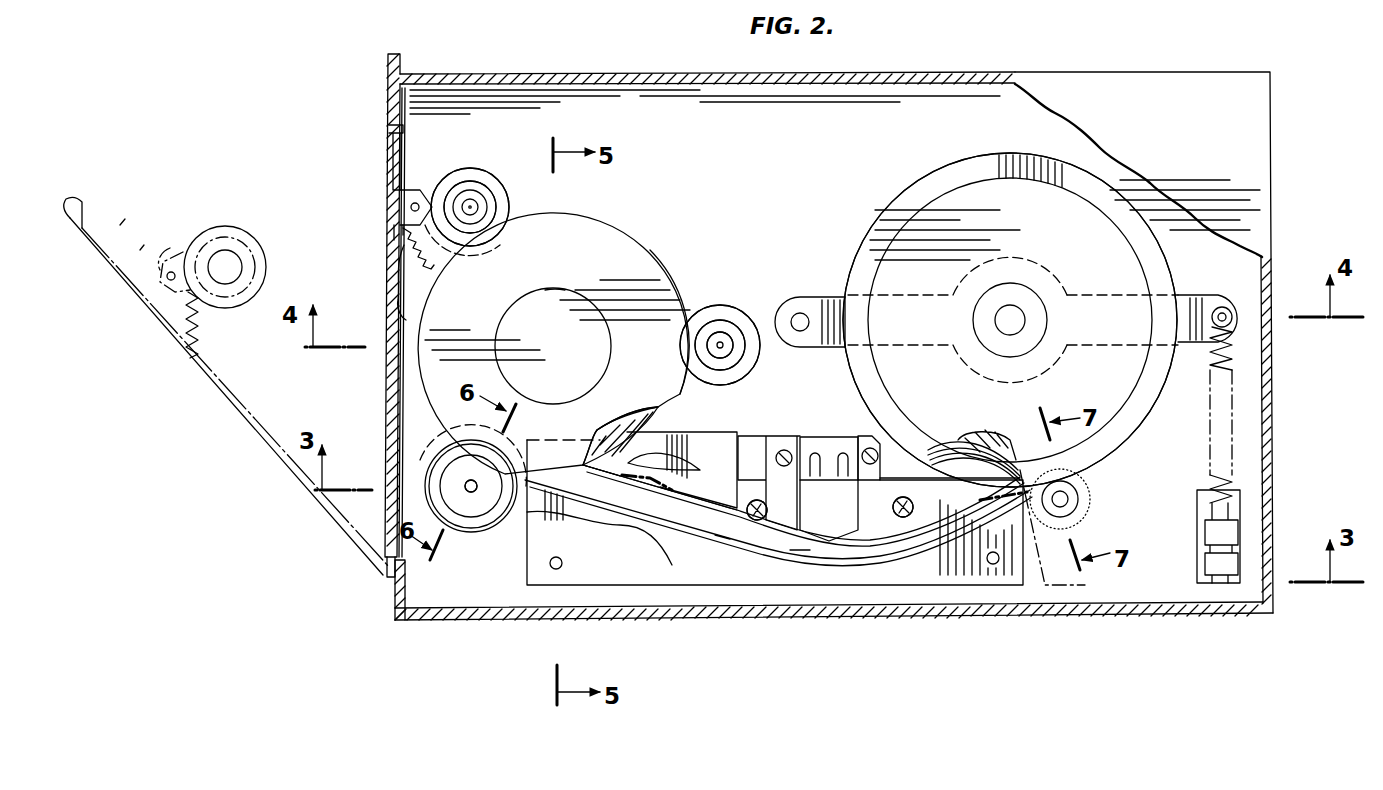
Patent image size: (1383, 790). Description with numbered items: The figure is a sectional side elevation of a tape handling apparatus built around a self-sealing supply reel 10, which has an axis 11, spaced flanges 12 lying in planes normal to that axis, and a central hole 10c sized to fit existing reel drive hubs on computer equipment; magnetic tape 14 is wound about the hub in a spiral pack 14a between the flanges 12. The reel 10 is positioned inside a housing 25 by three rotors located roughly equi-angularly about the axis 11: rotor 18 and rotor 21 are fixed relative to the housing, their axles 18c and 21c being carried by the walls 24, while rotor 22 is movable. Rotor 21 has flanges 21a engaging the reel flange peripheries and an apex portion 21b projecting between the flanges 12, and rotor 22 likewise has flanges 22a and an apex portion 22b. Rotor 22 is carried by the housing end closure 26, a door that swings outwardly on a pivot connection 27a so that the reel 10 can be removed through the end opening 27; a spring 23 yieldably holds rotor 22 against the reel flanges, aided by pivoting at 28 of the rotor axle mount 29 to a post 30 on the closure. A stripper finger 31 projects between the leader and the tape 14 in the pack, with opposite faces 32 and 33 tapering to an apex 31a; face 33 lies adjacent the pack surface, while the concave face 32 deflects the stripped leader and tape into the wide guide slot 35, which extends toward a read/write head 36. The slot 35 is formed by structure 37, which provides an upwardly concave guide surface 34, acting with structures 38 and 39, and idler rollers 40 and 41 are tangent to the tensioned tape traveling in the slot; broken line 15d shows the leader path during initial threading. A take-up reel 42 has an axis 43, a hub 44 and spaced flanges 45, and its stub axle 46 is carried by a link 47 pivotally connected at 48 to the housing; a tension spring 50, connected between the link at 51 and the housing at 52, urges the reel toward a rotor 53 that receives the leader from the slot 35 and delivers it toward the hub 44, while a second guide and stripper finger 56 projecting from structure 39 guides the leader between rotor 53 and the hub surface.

The supply reel 10 is at (642, 238).
The central hole 10c is at (553, 290).
The axis 11 is at (545, 347).
The flanges 12 is at (668, 272).
The magnetic tape 14 is at (715, 530).
The spiral pack 14a is at (608, 412).
The leader path 15d is at (858, 557).
The rotor 18 is at (480, 540).
The axle 18c is at (470, 492).
The rotor 21 is at (732, 300).
The flanges 21a is at (738, 315).
The apex portion 21b is at (748, 362).
The axle 21c is at (708, 345).
The rotor 22 is at (206, 232).
The flanges 22a is at (495, 203).
The apex portion 22b is at (458, 185).
The spring 23 is at (400, 285).
The walls 24 is at (761, 131).
The housing 25 is at (597, 68).
The housing end closure 26 is at (382, 160).
The end opening 27 is at (399, 378).
The pivot connection 27a is at (390, 578).
The pivot 28 is at (405, 205).
The rotor axle mount 29 is at (402, 238).
The post 30 is at (400, 215).
The stripper finger 31 is at (660, 440).
The apex 31a is at (620, 455).
The face 32 is at (672, 462).
The face 33 is at (592, 433).
The guide surface 34 is at (793, 558).
The guide slot 35 is at (722, 535).
The read/write head 36 is at (829, 489).
The structure 37 is at (672, 565).
The structure 38 is at (740, 460).
The structure 39 is at (925, 500).
The idler roller 40 is at (760, 520).
The idler roller 41 is at (906, 518).
The take-up reel 42 is at (1125, 200).
The axis 43 is at (1020, 305).
The hub 44 is at (1013, 301).
The flanges 45 is at (910, 190).
The stub axle 46 is at (1000, 322).
The link 47 is at (828, 350).
The pivotal connection 48 is at (800, 312).
The tension spring 50 is at (1235, 352).
The link connection point 51 is at (1232, 300).
The housing connection point 52 is at (1232, 528).
The rotor 53 is at (1098, 495).
The second guide and stripper finger 56 is at (985, 440).